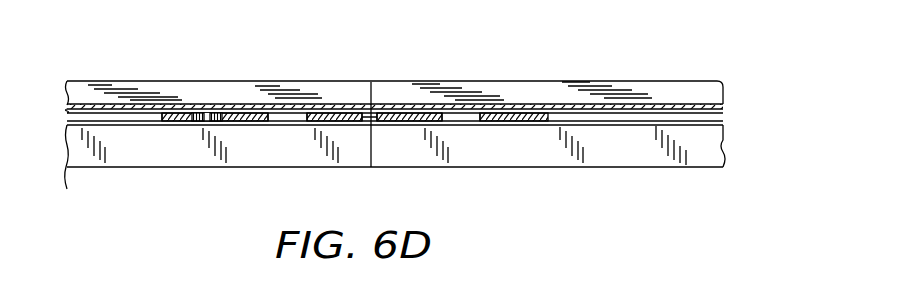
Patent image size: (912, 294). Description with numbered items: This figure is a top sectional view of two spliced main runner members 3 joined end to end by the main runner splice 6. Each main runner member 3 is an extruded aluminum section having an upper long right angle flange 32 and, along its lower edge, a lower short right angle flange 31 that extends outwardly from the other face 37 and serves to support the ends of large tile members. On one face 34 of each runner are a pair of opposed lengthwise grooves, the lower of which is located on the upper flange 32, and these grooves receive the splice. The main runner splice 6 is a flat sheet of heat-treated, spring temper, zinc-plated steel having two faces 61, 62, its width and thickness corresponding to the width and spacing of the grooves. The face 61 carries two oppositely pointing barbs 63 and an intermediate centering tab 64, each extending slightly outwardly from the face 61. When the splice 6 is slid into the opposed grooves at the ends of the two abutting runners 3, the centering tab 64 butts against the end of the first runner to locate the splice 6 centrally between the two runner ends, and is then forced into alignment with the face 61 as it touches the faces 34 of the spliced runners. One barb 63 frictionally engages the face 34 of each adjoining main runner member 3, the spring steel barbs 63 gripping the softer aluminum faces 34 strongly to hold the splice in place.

The main runner member 3 is at (195, 79).
The main runner splice 6 is at (185, 122).
The lower short right angle flange 31 is at (606, 90).
The upper long right angle flange 32 is at (616, 150).
The face 34 is at (692, 111).
The other face 37 is at (672, 105).
The face 61 is at (337, 110).
The face 62 is at (489, 124).
The barb 63 is at (290, 110).
The intermediate centering tab 64 is at (385, 110).